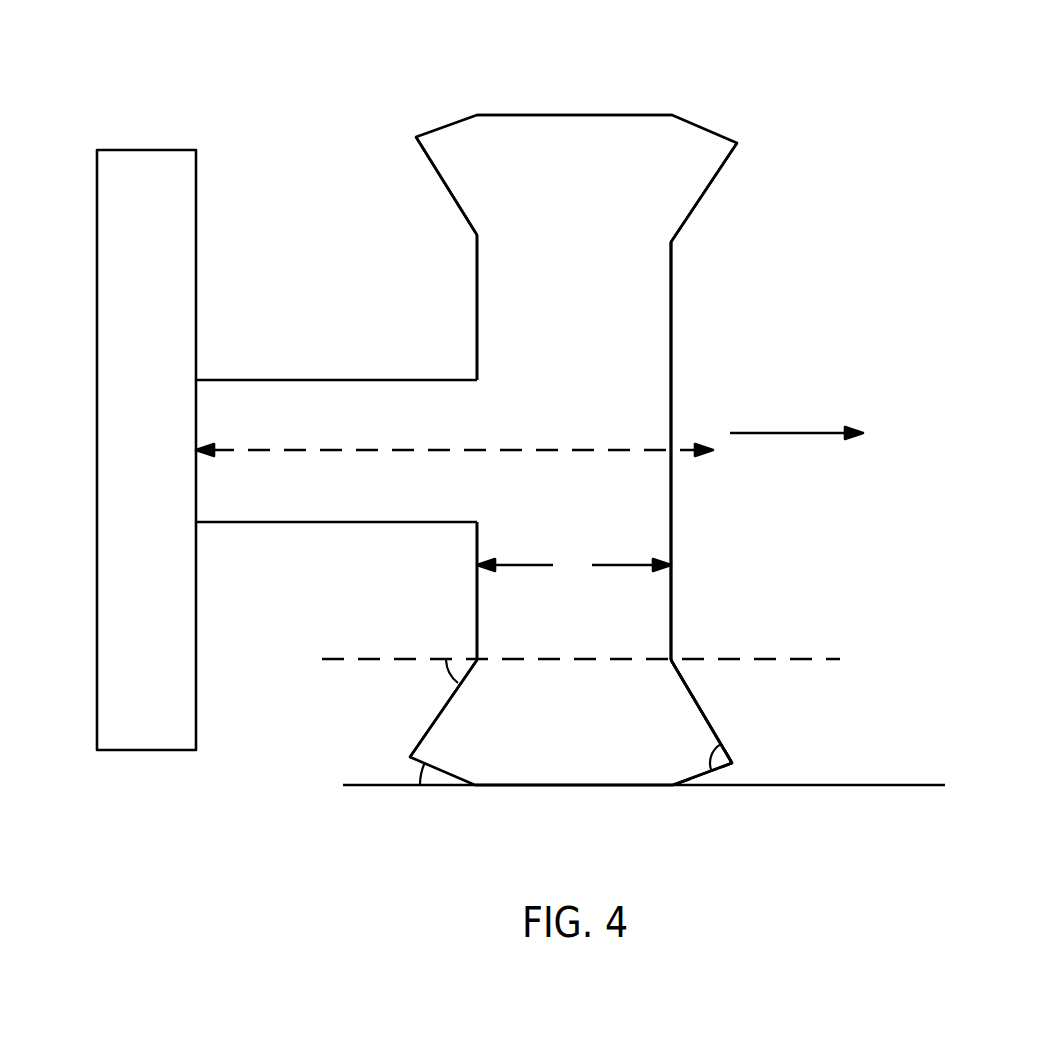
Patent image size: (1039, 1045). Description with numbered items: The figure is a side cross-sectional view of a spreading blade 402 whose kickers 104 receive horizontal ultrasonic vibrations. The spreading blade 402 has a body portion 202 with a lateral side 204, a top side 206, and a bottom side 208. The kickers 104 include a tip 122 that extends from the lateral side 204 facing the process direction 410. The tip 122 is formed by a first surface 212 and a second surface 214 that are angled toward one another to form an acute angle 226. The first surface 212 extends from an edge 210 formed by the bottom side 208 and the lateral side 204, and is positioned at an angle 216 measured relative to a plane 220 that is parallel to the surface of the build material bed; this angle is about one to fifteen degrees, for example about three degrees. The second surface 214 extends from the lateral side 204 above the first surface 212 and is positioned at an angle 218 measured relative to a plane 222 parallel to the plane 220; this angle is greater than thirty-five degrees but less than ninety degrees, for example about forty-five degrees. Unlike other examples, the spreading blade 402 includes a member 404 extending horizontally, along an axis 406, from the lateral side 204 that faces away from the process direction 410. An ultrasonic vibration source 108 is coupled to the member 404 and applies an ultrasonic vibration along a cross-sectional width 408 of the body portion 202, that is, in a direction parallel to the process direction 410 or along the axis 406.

The kickers 104 is at (452, 137).
The ultrasonic vibration source 108 is at (142, 150).
The tip 122 is at (732, 763).
The body portion 202 is at (653, 367).
The lateral side 204 is at (476, 352).
The top side 206 is at (557, 115).
The bottom side 208 is at (538, 785).
The edge 210 is at (673, 785).
The first surface 212 is at (707, 767).
The second surface 214 is at (700, 705).
The angle 216 is at (412, 773).
The angle 218 is at (445, 660).
The plane 220 is at (908, 783).
The plane 222 is at (820, 660).
The acute angle 226 is at (715, 757).
The spreading blade 402 is at (697, 88).
The member 404 is at (282, 380).
The axis 406 is at (405, 450).
The cross-sectional width 408 is at (513, 565).
The process direction 410 is at (792, 432).